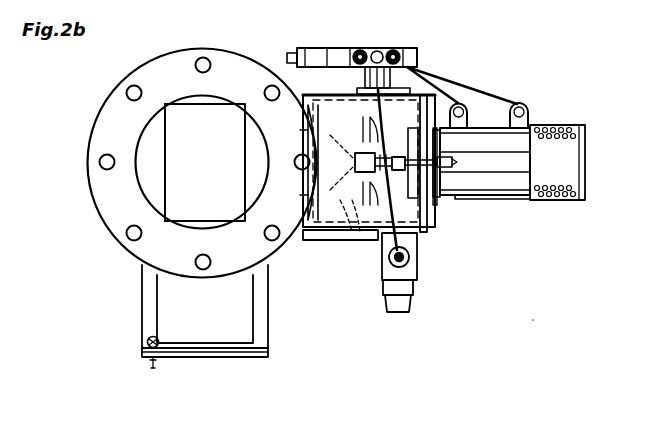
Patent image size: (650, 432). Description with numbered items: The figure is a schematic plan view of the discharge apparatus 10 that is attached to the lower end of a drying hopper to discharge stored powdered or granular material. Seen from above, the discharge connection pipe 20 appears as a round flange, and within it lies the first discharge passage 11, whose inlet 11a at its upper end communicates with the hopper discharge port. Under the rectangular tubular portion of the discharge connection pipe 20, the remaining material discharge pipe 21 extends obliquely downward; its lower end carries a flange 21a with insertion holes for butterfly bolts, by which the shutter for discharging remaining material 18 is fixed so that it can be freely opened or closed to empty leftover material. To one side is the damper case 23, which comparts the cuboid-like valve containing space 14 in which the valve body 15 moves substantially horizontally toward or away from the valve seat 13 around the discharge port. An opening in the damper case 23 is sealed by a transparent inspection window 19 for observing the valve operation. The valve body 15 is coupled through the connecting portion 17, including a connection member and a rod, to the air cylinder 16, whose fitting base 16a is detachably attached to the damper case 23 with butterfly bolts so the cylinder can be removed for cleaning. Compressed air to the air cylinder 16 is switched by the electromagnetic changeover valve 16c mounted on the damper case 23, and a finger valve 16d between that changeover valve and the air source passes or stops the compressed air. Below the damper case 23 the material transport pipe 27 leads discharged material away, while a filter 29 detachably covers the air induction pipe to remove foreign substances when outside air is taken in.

The discharge apparatus 10 is at (533, 320).
The first discharge passage 11 is at (170, 133).
The inlet 11a is at (147, 173).
The valve seat 13 is at (345, 148).
The valve containing space 14 is at (422, 230).
The valve body 15 is at (360, 232).
The air cylinder 16 is at (502, 182).
The fitting base 16a is at (437, 208).
The electromagnetic changeover valve 16c is at (413, 50).
The finger valve 16d is at (415, 287).
The connecting portion 17 is at (367, 153).
The shutter for discharging remaining material 18 is at (258, 363).
The inspection window 19 is at (322, 240).
The discharge connection pipe 20 is at (108, 110).
The remaining material discharge pipe 21 is at (157, 307).
The flange 21a is at (143, 347).
The damper case 23 is at (410, 108).
The material transport pipe 27 is at (331, 47).
The filter 29 is at (585, 167).